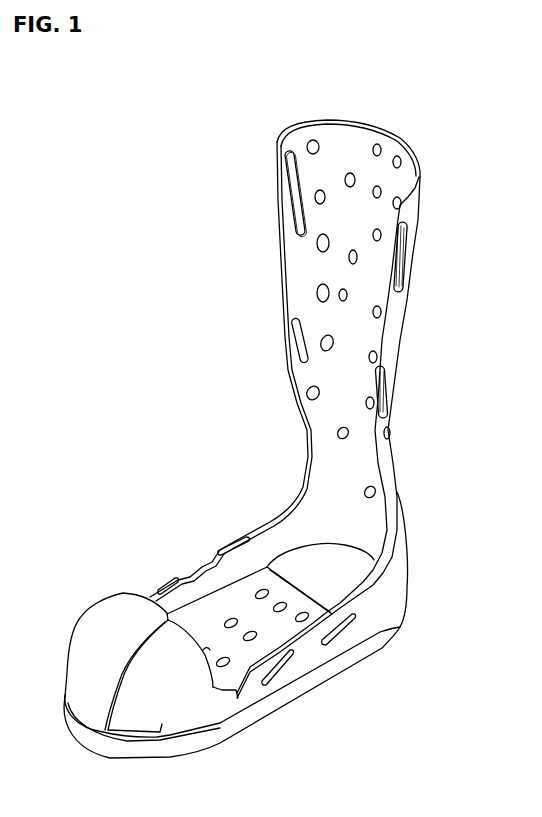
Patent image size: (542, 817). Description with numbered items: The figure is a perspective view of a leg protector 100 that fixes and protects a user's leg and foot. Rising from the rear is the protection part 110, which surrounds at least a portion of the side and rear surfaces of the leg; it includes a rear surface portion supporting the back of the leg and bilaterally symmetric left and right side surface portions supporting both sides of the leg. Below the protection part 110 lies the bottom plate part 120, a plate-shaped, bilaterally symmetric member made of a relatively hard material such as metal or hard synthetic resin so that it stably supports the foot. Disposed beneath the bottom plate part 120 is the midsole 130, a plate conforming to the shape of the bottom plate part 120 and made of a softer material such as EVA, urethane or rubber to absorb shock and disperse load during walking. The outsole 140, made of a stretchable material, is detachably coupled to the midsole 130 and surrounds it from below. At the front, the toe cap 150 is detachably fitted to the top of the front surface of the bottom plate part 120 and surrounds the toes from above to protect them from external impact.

The leg protector 100 is at (95, 89).
The protection part 110 is at (393, 316).
The bottom plate part 120 is at (212, 615).
The midsole 130 is at (340, 578).
The outsole 140 is at (293, 687).
The toe cap 150 is at (106, 637).